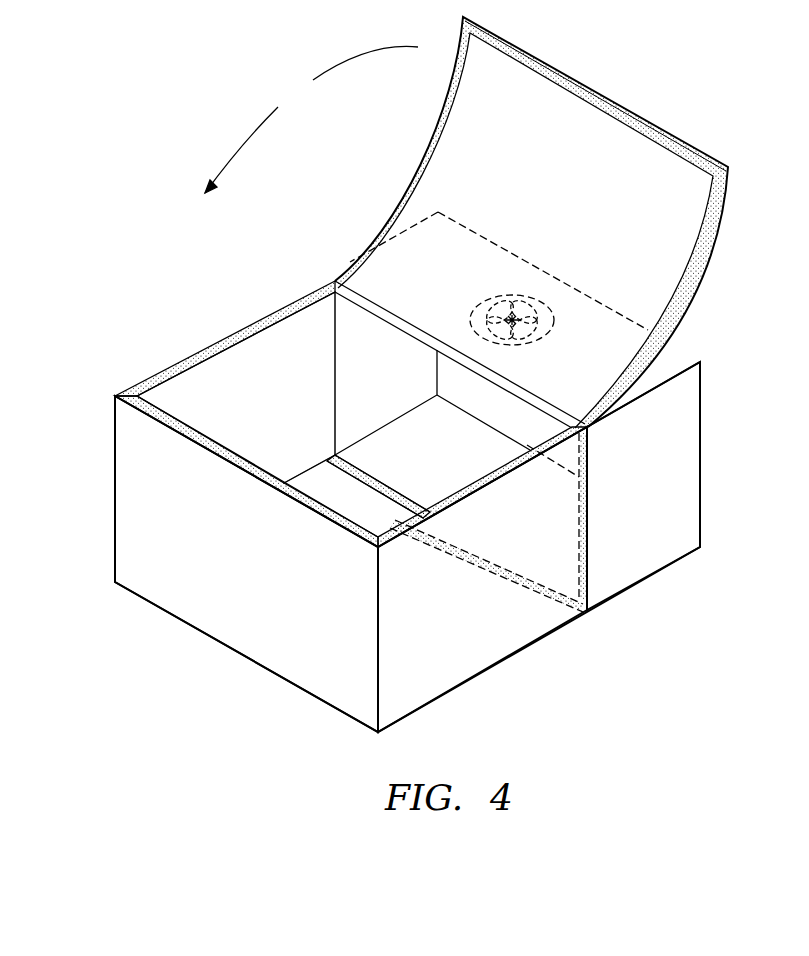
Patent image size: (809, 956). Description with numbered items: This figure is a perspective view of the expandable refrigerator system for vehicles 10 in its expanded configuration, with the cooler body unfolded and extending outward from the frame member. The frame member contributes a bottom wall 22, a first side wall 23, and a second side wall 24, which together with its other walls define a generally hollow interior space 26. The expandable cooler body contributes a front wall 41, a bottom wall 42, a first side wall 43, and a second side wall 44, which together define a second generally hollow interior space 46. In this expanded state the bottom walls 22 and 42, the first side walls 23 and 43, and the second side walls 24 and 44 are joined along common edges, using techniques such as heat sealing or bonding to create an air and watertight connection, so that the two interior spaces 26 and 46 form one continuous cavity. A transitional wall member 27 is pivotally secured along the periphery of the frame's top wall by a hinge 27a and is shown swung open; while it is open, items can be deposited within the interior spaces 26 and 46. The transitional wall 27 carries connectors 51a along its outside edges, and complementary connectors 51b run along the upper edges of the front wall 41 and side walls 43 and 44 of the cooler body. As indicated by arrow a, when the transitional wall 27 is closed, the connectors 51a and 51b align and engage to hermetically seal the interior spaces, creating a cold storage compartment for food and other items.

The expandable refrigerator system for vehicles 10 is at (125, 167).
The arrow a is at (311, 119).
The bottom wall 22 is at (441, 465).
The first side wall 23 is at (398, 391).
The second side wall 24 is at (661, 511).
The interior space 26 is at (488, 443).
The transitional wall member 27 is at (580, 195).
The hinge 27a is at (558, 407).
The front wall 41 is at (254, 590).
The bottom wall 42 is at (376, 513).
The first side wall 43 is at (286, 383).
The second side wall 44 is at (435, 656).
The interior space 46 is at (322, 385).
The connectors 51a is at (610, 97).
The complementary connectors 51b is at (157, 407).